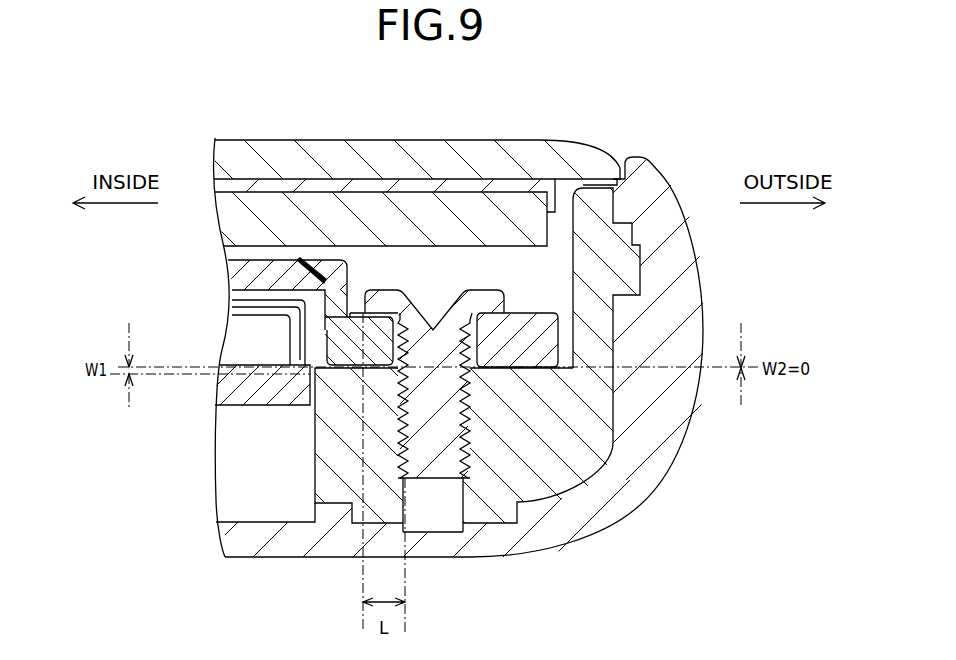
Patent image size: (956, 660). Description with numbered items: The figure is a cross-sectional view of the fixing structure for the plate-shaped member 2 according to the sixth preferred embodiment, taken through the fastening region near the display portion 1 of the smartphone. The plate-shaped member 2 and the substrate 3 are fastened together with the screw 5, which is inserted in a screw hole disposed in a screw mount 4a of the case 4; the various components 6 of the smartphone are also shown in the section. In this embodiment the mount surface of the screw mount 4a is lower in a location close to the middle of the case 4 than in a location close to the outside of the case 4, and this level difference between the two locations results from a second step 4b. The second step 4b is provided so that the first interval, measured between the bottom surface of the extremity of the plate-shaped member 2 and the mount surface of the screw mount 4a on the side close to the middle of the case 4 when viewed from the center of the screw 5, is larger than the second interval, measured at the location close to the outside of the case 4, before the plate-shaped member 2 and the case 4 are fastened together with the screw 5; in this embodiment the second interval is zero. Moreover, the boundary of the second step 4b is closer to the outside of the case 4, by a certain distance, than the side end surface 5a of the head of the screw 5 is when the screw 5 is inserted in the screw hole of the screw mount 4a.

The display portion 1 is at (497, 212).
The plate-shaped member 2 is at (310, 257).
The substrate 3 is at (222, 386).
The case 4 is at (606, 511).
The screw mount 4a is at (493, 437).
The second step 4b is at (357, 376).
The screw 5 is at (386, 290).
The side end surface of the head of the screw 5a is at (350, 313).
The various components 6 is at (245, 332).